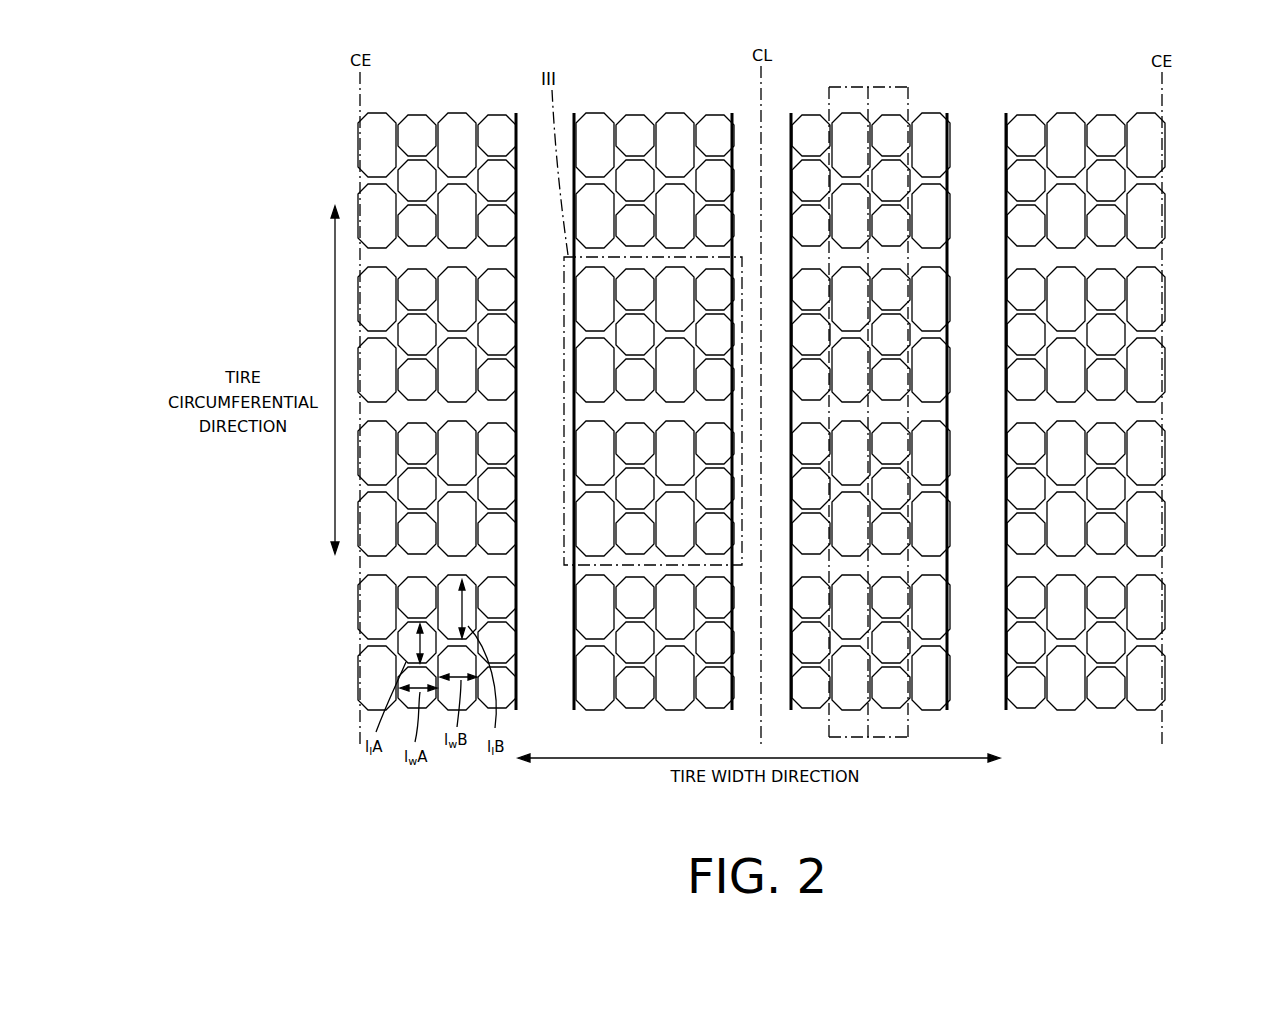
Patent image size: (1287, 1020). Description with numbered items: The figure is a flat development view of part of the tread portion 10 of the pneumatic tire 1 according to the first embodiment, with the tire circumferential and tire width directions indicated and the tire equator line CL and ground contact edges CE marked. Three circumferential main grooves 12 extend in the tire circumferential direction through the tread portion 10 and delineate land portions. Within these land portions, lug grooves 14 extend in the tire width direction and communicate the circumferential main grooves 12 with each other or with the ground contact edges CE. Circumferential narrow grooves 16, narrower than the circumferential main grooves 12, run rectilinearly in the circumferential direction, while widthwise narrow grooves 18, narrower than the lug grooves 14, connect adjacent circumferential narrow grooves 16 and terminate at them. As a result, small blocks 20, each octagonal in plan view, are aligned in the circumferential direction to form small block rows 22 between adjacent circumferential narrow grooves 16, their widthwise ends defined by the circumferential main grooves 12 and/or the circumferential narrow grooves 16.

The pneumatic tire 1 is at (1212, 95).
The tread portion 10 is at (1180, 172).
The circumferential main groove 12 is at (528, 157).
The lug groove 14 is at (418, 412).
The circumferential narrow groove 16 is at (672, 142).
The widthwise narrow groove 18 is at (630, 197).
The small block 20 is at (850, 207).
The small block row 22 is at (850, 87).